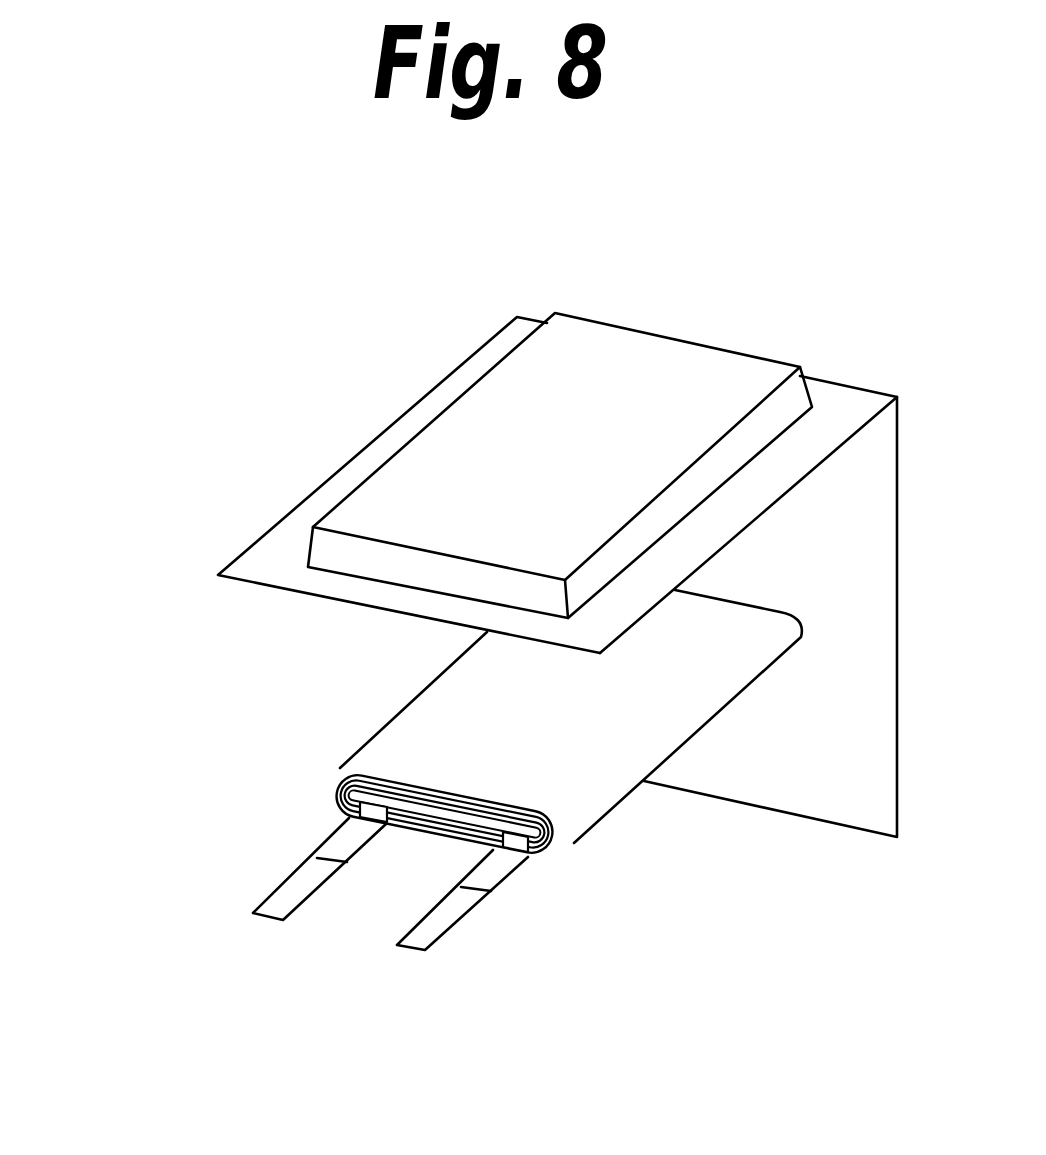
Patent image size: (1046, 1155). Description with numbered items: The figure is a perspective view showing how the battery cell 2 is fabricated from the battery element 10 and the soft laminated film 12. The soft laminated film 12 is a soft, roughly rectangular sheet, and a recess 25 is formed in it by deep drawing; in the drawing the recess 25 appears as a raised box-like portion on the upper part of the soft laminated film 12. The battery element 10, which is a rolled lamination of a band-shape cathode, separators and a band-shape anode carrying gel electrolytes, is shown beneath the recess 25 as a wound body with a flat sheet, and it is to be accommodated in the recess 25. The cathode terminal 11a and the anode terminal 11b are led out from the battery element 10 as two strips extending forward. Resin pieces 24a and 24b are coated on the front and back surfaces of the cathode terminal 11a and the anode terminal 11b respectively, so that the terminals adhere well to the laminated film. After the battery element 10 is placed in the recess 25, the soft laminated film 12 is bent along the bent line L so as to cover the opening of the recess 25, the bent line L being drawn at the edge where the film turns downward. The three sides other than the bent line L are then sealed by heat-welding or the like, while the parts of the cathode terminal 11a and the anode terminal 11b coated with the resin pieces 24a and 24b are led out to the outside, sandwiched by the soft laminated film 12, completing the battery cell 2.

The battery cell 2 is at (521, 231).
The battery element 10 is at (355, 748).
The cathode terminal 11a is at (393, 940).
The anode terminal 11b is at (253, 915).
The soft laminated film 12 is at (347, 458).
The resin piece 24a is at (490, 872).
The resin piece 24b is at (350, 833).
The recess 25 is at (507, 379).
The bent line L is at (837, 380).